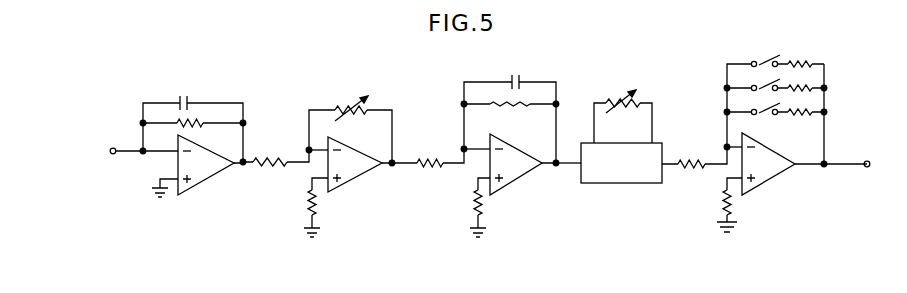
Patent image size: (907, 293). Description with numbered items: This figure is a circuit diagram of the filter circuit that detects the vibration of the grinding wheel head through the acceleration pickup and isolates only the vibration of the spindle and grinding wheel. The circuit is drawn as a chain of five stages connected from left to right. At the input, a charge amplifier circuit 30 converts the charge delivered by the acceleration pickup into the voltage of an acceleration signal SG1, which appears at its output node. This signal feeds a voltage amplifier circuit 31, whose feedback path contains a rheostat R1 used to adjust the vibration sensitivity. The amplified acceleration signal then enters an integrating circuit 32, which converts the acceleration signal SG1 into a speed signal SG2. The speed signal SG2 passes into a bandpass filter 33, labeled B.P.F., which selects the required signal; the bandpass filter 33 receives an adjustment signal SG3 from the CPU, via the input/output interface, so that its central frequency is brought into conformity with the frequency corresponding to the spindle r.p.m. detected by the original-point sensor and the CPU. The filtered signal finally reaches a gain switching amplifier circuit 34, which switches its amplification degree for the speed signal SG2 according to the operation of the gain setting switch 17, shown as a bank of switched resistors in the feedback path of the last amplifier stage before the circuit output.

The charge amplifier circuit 30 is at (211, 178).
The voltage amplifier circuit 31 is at (352, 183).
The integrating circuit 32 is at (515, 183).
The bandpass filter 33 is at (652, 184).
The gain switching amplifier circuit 34 is at (770, 182).
The gain setting switch 17 is at (726, 76).
The rheostat R1 is at (347, 110).
The acceleration signal SG1 is at (245, 166).
The speed signal SG2 is at (570, 166).
The adjustment signal SG3 is at (623, 183).